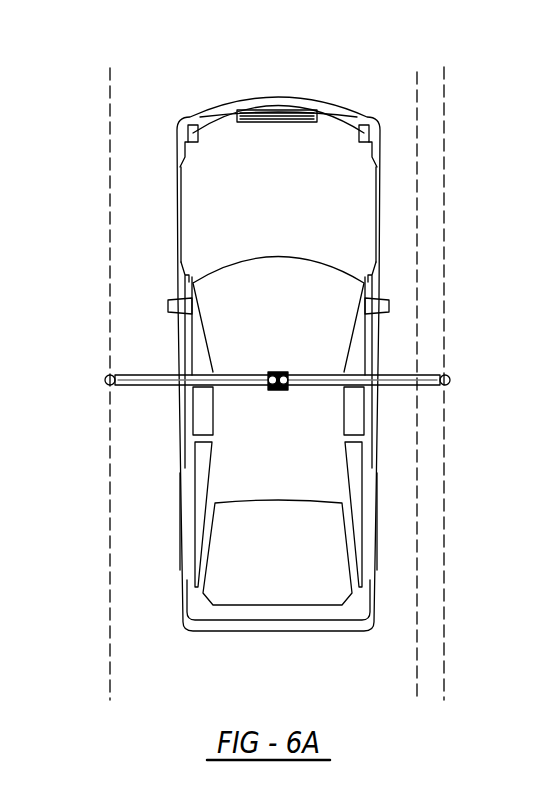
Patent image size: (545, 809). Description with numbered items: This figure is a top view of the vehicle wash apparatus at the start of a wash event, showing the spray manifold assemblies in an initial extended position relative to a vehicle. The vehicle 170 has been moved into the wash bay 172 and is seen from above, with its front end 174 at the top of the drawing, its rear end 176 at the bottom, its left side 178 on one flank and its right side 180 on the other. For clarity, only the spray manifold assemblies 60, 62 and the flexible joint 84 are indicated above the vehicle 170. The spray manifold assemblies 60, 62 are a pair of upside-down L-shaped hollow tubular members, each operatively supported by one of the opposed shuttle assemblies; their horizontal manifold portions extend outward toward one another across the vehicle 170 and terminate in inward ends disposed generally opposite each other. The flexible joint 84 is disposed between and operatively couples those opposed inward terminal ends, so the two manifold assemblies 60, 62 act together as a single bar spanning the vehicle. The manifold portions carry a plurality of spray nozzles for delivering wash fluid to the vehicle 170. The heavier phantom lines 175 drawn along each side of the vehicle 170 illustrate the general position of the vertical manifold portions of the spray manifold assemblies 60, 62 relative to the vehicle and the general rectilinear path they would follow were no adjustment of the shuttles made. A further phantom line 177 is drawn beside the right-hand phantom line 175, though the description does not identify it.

The spray manifold assembly 60 is at (145, 373).
The spray manifold assembly 62 is at (400, 377).
The flexible joint 84 is at (278, 390).
The vehicle 170 is at (223, 100).
The wash bay 172 is at (325, 68).
The front end 174 is at (285, 97).
The phantom lines 175 is at (108, 175).
The rear end 176 is at (232, 635).
The lane boundary line 177 is at (417, 75).
The left side 178 is at (182, 418).
The right side 180 is at (375, 448).